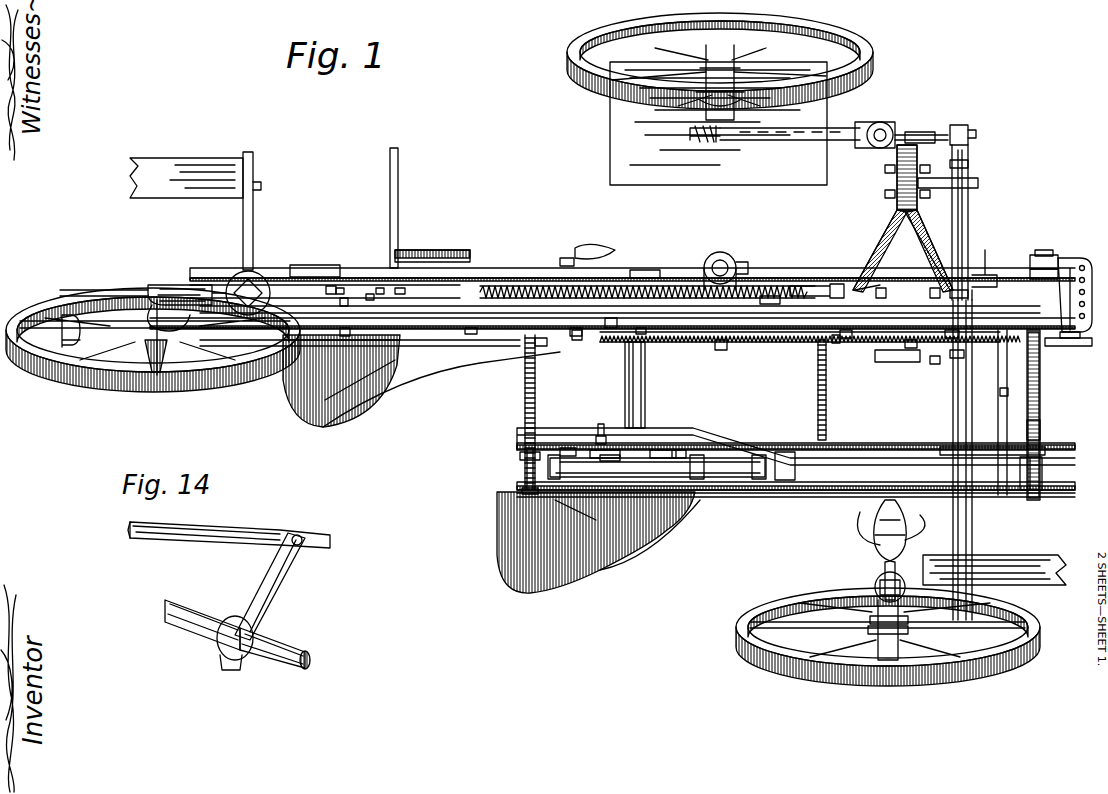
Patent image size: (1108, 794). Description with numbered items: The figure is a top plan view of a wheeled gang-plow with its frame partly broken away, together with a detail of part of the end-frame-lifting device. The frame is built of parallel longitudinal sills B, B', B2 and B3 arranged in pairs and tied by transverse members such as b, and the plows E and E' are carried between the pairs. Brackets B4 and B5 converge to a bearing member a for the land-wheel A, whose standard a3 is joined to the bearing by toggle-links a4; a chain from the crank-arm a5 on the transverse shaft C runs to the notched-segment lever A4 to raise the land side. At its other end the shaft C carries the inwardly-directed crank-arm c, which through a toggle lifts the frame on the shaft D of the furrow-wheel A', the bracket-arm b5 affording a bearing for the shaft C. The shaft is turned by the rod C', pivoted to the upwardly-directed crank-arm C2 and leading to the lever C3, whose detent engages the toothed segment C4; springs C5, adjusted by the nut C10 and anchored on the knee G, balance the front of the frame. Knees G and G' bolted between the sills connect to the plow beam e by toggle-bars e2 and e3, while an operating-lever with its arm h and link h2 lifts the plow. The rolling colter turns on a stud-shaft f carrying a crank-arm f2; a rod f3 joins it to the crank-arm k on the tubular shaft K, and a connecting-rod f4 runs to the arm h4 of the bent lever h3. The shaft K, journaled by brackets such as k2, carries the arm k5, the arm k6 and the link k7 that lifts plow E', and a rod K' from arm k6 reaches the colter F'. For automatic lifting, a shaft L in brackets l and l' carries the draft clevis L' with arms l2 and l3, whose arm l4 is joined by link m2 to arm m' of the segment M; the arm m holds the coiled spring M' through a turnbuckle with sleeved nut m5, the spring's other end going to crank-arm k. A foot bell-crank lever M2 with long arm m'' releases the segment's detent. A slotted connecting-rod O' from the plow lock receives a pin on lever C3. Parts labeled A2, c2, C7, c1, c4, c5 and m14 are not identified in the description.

In FIG. 1, the land-wheel A is at (746, 66).
In FIG. 1, the furrow-wheel A' is at (888, 650).
In FIG. 1, the front wheel A2 is at (220, 376).
In FIG. 1, the lever A4 is at (720, 160).
In FIG. 1, the bearing member a is at (906, 134).
In FIG. 1, the standard a3 is at (700, 136).
In FIG. 1, the toggle-links a4 is at (832, 130).
In FIG. 1, the crank-arm a5 is at (958, 126).
In FIG. 1, the longitudinal sill B is at (612, 293).
In FIG. 1, the longitudinal sill B' is at (810, 354).
In FIG. 1, the longitudinal sill B2 is at (790, 460).
In FIG. 1, the longitudinal sill B3 is at (812, 490).
In FIG. 1, the bracket B4 is at (935, 240).
In FIG. 1, the bracket B5 is at (870, 225).
In FIG. 1, the transverse shaft C is at (994, 460).
In FIG. 14, the transverse shaft C is at (250, 635).
In FIG. 14, the rod C' is at (229, 523).
In FIG. 1, the crank-arm C2 is at (972, 290).
In FIG. 1, the crank arm c2 is at (948, 182).
In FIG. 14, the crank arm c2 is at (300, 563).
In FIG. 1, the lever C3 is at (566, 258).
In FIG. 1, the toothed segment C4 is at (415, 252).
In FIG. 1, the spring C5 is at (800, 288).
In FIG. 1, the lever handle C7 is at (586, 248).
In FIG. 1, the nut C10 is at (876, 286).
In FIG. 1, the crank-arm c is at (935, 618).
In FIG. 1, the bearing c1 is at (600, 458).
In FIG. 1, the sleeve c4 is at (660, 458).
In FIG. 1, the collar c5 is at (678, 458).
In FIG. 1, the shaft of the furrow-wheel D is at (875, 582).
In FIG. 1, the plow E is at (421, 383).
In FIG. 1, the plow E' is at (598, 554).
In FIG. 1, the vertical beam e is at (368, 294).
In FIG. 1, the toggle-bar e2 is at (380, 288).
In FIG. 1, the toggle-bar e3 is at (470, 334).
In FIG. 1, the rolling colter F' is at (775, 305).
In FIG. 1, the stud-shaft f is at (766, 296).
In FIG. 1, the crank-arm f2 is at (716, 254).
In FIG. 1, the rod f3 is at (642, 328).
In FIG. 1, the connecting-rod f4 is at (575, 336).
In FIG. 1, the knee G is at (647, 249).
In FIG. 1, the knee G' is at (657, 436).
In FIG. 1, the arm h is at (150, 322).
In FIG. 1, the link h2 is at (330, 288).
In FIG. 1, the bent lever h3 is at (345, 334).
In FIG. 1, the arm h4 is at (400, 292).
In FIG. 1, the shaft K is at (647, 385).
In FIG. 1, the rod K' is at (776, 440).
In FIG. 1, the crank-arm k is at (640, 320).
In FIG. 1, the bracket k2 is at (600, 520).
In FIG. 1, the arm k5 is at (565, 448).
In FIG. 1, the arm k6 is at (600, 438).
In FIG. 1, the link k7 is at (540, 450).
In FIG. 1, the shaft L is at (1045, 428).
In FIG. 1, the clevis L' is at (1068, 365).
In FIG. 1, the bracket l is at (1040, 473).
In FIG. 1, the bracket l' is at (1075, 276).
In FIG. 1, the clevis arm l2 is at (1045, 258).
In FIG. 1, the clevis arm l3 is at (1066, 344).
In FIG. 1, the arm l4 is at (962, 343).
In FIG. 1, the segment M is at (936, 358).
In FIG. 1, the coiled spring M' is at (848, 385).
In FIG. 1, the bell-crank lever M2 is at (318, 268).
In FIG. 1, the arm m is at (917, 316).
In FIG. 1, the arm m' is at (924, 389).
In FIG. 1, the long arm m'' is at (356, 239).
In FIG. 1, the link m2 is at (955, 358).
In FIG. 1, the sleeved nut m5 is at (887, 277).
In FIG. 1, the bracket m14 is at (540, 344).
In FIG. 1, the connecting-rod O' is at (333, 260).
In FIG. 1, the transverse frame member b is at (1008, 392).
In FIG. 1, the bracket-arm b5 is at (902, 586).